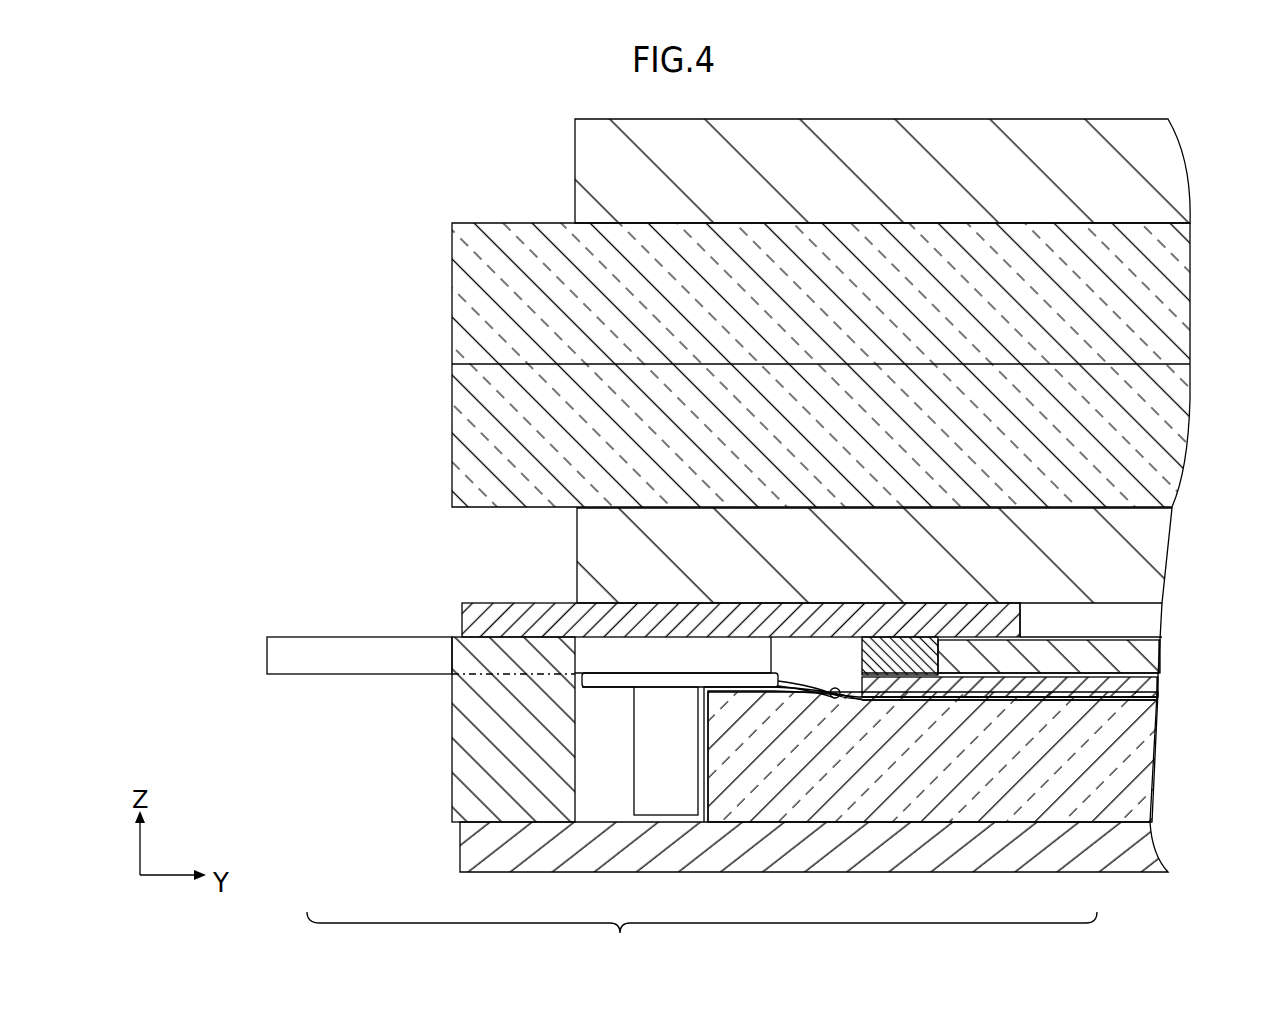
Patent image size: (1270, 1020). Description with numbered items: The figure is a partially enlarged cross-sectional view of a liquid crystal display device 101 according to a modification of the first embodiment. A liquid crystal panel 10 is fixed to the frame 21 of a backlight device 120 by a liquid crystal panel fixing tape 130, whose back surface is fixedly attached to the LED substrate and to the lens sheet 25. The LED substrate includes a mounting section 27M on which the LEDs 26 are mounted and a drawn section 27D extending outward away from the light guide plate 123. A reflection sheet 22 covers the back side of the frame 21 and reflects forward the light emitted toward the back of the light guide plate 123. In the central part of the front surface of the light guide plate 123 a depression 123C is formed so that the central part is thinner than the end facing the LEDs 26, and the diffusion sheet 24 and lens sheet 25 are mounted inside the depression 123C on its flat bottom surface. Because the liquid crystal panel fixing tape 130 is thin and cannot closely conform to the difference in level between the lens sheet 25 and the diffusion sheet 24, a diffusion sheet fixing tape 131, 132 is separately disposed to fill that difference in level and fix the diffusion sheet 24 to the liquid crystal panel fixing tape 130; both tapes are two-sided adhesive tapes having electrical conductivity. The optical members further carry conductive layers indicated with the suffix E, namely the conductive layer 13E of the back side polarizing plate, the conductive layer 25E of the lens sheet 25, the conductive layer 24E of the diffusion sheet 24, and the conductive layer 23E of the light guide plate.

The liquid crystal display device 101 is at (1180, 93).
The liquid crystal panel 10 is at (350, 327).
The liquid crystal panel fixing tape 130 is at (488, 623).
The diffusion sheet fixing tape 131 is at (675, 678).
The diffusion sheet fixing tape 132 is at (902, 660).
The conductive layer of back side polarizing plate 13E is at (1110, 602).
The drawn section 27D is at (315, 663).
The mounting section 27M is at (602, 665).
The frame 21 is at (465, 785).
The reflection sheet 22 is at (508, 848).
The LEDs 26 is at (663, 797).
The light guide plate 123 is at (797, 807).
The depression 123C is at (830, 698).
The diffusion sheet 24 is at (957, 680).
The lens sheet 25 is at (1045, 653).
The conductive layer of lens sheet 25E is at (1110, 645).
The conductive layer of diffusion sheet 24E is at (1108, 688).
The conductive layer of light guide plate 23E is at (1108, 703).
The backlight device 120 is at (702, 939).